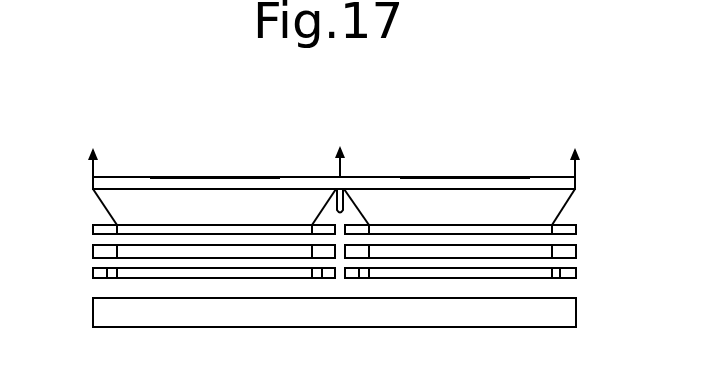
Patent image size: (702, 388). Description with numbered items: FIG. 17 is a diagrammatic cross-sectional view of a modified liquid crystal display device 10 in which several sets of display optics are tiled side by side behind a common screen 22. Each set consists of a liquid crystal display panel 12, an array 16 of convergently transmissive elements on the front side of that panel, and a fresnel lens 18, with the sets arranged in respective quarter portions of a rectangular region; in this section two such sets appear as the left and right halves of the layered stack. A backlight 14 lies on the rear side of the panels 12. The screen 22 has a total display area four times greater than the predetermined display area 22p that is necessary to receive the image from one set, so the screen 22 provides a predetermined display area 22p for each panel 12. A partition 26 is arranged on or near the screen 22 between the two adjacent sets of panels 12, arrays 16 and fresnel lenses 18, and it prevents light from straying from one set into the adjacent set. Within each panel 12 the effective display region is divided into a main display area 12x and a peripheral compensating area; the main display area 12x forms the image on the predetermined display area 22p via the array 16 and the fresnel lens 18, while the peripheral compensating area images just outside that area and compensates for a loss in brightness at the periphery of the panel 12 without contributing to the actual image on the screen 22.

The liquid crystal display device 10 is at (492, 121).
The screen 22 is at (127, 177).
The predetermined display area 22p is at (212, 177).
The partition 26 is at (348, 203).
The fresnel lens 18 is at (93, 229).
The array of convergently transmissive elements 16 is at (93, 251).
The liquid crystal display panel 12 is at (93, 273).
The main display area 12x is at (168, 280).
The backlight 14 is at (112, 317).